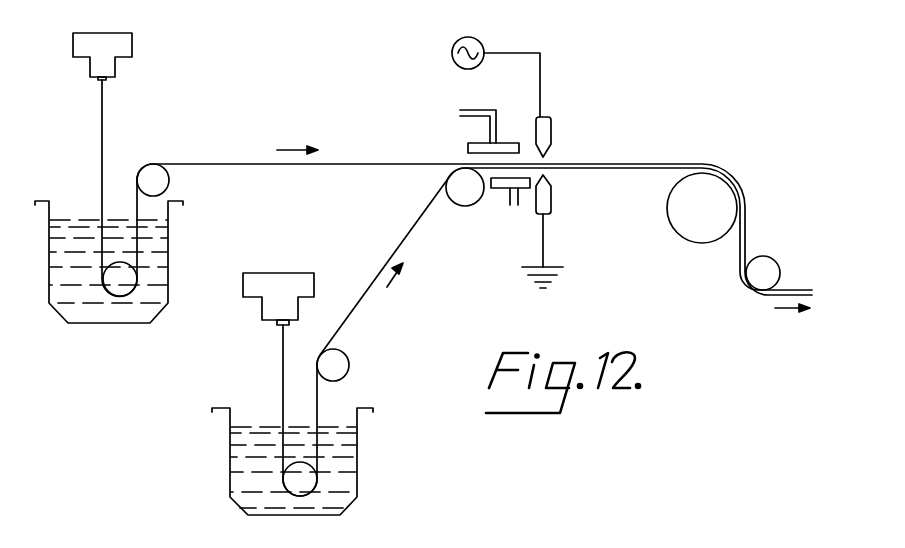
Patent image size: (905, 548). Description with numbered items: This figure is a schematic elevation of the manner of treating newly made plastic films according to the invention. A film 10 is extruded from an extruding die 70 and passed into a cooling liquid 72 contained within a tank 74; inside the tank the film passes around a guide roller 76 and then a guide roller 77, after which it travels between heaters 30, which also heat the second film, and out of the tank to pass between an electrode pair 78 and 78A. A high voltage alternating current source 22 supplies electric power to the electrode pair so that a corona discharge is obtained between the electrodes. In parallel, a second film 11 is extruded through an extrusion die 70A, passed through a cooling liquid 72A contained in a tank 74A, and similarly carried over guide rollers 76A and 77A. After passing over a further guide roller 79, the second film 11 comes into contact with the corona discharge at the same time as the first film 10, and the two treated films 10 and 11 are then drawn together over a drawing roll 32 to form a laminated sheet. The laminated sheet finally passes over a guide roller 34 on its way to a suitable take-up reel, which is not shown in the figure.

The film 10 is at (102, 103).
The second film 11 is at (412, 225).
The high voltage alternating current source 22 is at (480, 40).
The heaters 30 is at (500, 143).
The drawing roll 32 is at (681, 236).
The guide roller 34 is at (761, 282).
The extruding die 70 is at (132, 40).
The extrusion die 70A is at (268, 272).
The cooling liquid 72 is at (80, 218).
The cooling liquid 72A is at (272, 425).
The tank 74 is at (168, 260).
The tank 74A is at (230, 433).
The guide roller 76 is at (113, 294).
The guide roller 76A is at (303, 496).
The guide roller 77 is at (168, 182).
The guide roller 77A is at (349, 362).
The electrode 78 is at (552, 126).
The electrode 78A is at (552, 197).
The guide roller 79 is at (447, 195).